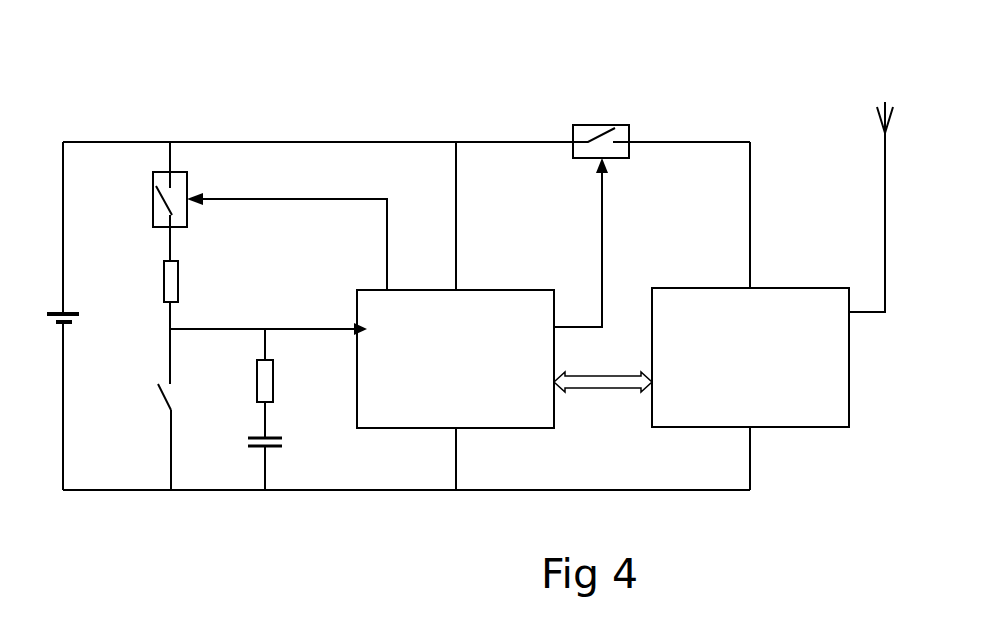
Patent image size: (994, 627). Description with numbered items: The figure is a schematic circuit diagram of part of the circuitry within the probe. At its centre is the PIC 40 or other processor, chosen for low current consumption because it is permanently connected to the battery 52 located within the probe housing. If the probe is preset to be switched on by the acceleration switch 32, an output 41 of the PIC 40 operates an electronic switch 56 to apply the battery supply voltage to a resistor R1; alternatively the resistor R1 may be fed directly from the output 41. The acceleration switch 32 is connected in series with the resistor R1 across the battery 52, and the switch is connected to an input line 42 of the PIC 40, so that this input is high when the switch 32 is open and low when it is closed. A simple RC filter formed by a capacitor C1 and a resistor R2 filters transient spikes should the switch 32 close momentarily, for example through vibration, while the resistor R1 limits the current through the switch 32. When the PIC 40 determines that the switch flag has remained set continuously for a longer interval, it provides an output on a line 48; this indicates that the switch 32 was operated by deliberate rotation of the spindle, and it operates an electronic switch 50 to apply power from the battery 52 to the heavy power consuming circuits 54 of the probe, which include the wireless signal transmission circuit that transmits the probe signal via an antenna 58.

The acceleration switch 32 is at (158, 393).
The PIC processor 40 is at (504, 288).
The output of the PIC 41 is at (328, 197).
The input line of the PIC 42 is at (310, 327).
The output line of the PIC 48 is at (602, 221).
The electronic switch 50 is at (593, 123).
The battery 52 is at (74, 320).
The heavy power consuming circuits 54 is at (803, 286).
The electronic switch 56 is at (152, 207).
The antenna 58 is at (880, 117).
The resistor R1 is at (178, 282).
The resistor R2 is at (273, 382).
The capacitor C1 is at (283, 440).